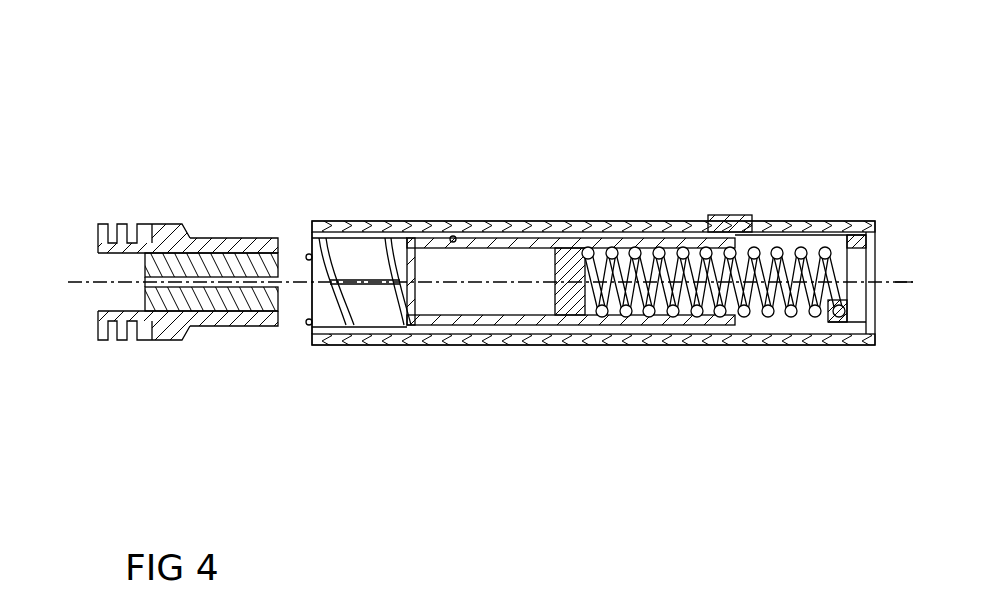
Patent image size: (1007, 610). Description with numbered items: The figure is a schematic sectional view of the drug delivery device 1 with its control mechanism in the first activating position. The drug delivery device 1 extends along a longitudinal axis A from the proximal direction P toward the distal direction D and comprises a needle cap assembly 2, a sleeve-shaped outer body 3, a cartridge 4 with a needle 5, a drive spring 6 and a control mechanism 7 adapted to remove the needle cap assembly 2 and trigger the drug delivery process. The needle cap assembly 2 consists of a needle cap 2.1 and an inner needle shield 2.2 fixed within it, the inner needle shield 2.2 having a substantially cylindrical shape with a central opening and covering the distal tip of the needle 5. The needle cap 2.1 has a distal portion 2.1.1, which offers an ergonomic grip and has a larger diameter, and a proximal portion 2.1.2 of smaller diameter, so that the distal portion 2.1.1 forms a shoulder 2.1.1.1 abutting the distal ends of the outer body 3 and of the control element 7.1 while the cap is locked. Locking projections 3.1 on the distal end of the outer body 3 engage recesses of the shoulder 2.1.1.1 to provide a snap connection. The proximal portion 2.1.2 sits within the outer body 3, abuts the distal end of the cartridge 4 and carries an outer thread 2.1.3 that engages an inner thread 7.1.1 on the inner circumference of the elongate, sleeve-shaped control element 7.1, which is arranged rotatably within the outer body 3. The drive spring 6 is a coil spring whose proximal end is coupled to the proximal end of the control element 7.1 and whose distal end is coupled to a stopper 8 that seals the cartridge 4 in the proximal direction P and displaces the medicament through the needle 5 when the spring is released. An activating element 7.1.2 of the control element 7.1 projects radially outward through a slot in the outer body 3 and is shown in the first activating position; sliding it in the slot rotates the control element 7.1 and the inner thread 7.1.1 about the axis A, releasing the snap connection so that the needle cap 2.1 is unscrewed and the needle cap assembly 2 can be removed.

The drug delivery device 1 is at (498, 161).
The needle cap assembly 2 is at (113, 191).
The needle cap 2.1 is at (158, 226).
The distal portion 2.1.1 is at (118, 340).
The shoulder 2.1.1.1 is at (183, 225).
The proximal portion 2.1.2 is at (205, 340).
The outer thread 2.1.3 is at (248, 340).
The inner needle shield 2.2 is at (223, 263).
The outer body 3 is at (625, 220).
The locking projections 3.1 is at (305, 345).
The cartridge 4 is at (487, 325).
The needle 5 is at (347, 281).
The drive spring 6 is at (765, 314).
The control mechanism 7 is at (768, 191).
The control element 7.1 is at (850, 248).
The inner thread 7.1.1 is at (348, 322).
The activating element 7.1.2 is at (735, 216).
The stopper 8 is at (570, 300).
The longitudinal axis A is at (898, 284).
The distal direction D is at (479, 284).
The proximal direction P is at (932, 281).